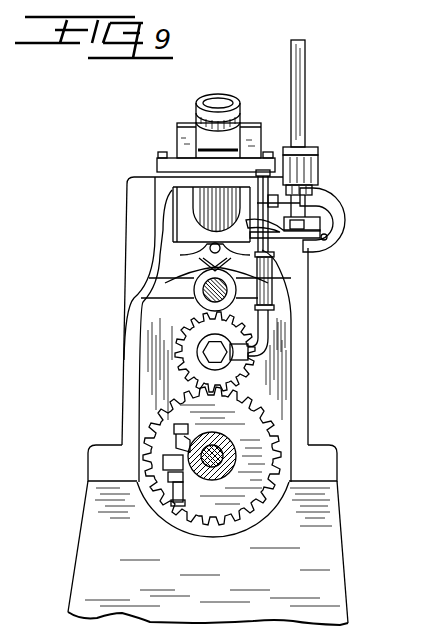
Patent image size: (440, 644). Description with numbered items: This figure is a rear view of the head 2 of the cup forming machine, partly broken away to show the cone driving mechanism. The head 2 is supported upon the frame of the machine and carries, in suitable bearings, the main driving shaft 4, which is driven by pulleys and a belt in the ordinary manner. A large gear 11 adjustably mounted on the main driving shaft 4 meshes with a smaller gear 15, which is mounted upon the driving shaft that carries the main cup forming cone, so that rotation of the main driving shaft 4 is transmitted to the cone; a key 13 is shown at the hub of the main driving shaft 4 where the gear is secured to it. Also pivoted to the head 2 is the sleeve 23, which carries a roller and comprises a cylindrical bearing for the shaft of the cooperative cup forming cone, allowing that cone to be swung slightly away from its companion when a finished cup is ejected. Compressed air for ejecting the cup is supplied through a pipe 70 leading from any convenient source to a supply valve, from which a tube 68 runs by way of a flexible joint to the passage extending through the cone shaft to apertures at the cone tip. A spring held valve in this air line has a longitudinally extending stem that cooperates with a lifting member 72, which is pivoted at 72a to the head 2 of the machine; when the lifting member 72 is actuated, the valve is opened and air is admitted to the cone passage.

The head 2 is at (330, 533).
The main driving shaft 4 is at (228, 444).
The large gear 11 is at (262, 436).
The key 13 is at (186, 478).
The smaller gear 15 is at (192, 363).
The sleeve 23 is at (195, 110).
The tube 68 is at (268, 332).
The pipe 70 is at (303, 107).
The lifting member 72 is at (295, 243).
The pivot 72a is at (328, 238).